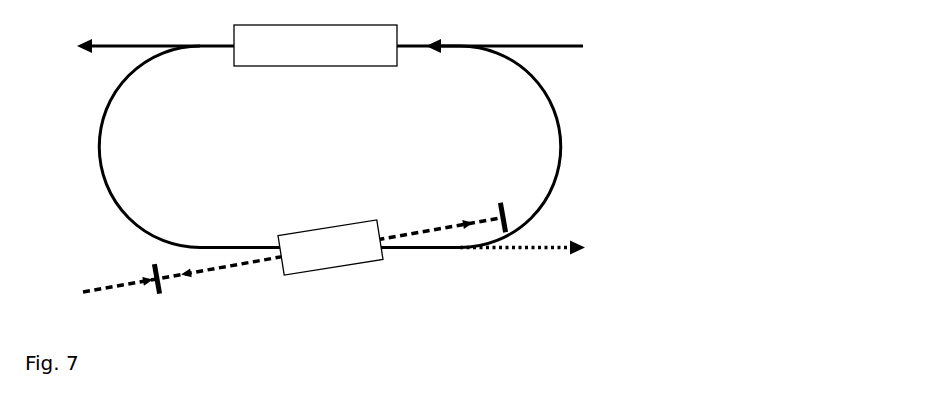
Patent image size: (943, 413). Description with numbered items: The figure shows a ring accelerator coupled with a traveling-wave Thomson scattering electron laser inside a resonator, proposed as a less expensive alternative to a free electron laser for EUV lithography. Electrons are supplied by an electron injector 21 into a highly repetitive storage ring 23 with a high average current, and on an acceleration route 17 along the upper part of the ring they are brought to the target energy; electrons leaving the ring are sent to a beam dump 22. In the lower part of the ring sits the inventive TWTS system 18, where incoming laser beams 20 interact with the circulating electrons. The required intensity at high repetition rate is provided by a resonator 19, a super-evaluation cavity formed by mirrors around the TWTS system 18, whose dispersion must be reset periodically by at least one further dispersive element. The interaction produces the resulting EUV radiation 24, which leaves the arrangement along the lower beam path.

The acceleration route 17 is at (315, 45).
The TWTS system 18 is at (330, 247).
The resonator 19 is at (180, 294).
The incoming laser beams 20 is at (291, 263).
The electron injector 21 is at (506, 55).
The beam dump 22 is at (138, 55).
The storage ring 23 is at (330, 147).
The resulting EUV radiation 24 is at (522, 259).